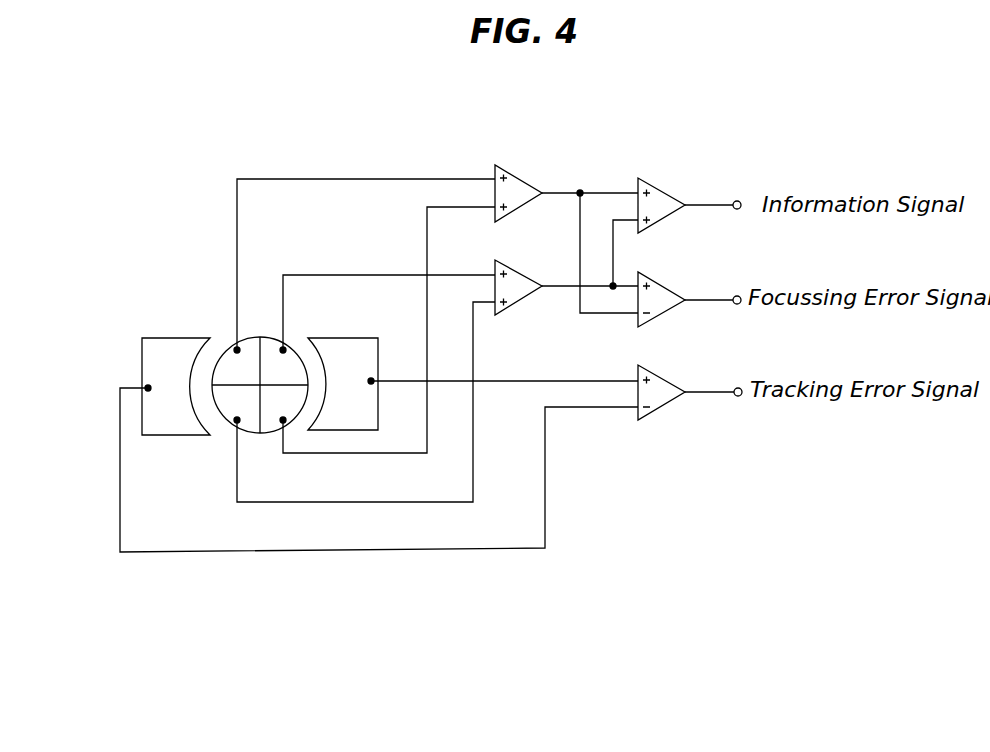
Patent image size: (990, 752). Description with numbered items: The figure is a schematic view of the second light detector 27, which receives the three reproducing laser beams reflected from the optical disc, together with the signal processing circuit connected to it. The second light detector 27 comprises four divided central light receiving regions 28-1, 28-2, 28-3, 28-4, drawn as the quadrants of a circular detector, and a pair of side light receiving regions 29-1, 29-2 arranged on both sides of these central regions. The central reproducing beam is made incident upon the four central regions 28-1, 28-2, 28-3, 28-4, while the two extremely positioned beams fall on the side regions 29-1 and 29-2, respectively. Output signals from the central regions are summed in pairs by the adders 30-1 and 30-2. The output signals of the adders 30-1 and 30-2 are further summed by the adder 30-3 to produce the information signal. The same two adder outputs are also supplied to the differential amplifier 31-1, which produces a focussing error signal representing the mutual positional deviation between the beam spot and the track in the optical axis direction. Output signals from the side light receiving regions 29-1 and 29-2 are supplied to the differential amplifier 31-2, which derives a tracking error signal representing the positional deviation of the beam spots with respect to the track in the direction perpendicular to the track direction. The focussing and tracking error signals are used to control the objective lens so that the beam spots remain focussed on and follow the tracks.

The second light detector 27 is at (258, 326).
The light receiving region 28-1 is at (224, 354).
The light receiving region 28-2 is at (229, 426).
The light receiving region 28-3 is at (269, 431).
The light receiving region 28-4 is at (291, 357).
The light receiving region 29-1 is at (154, 337).
The light receiving region 29-2 is at (365, 432).
The adder 30-1 is at (520, 170).
The adder 30-2 is at (518, 307).
The adder 30-3 is at (657, 182).
The differential amplifier 31-1 is at (670, 288).
The differential amplifier 31-2 is at (660, 412).